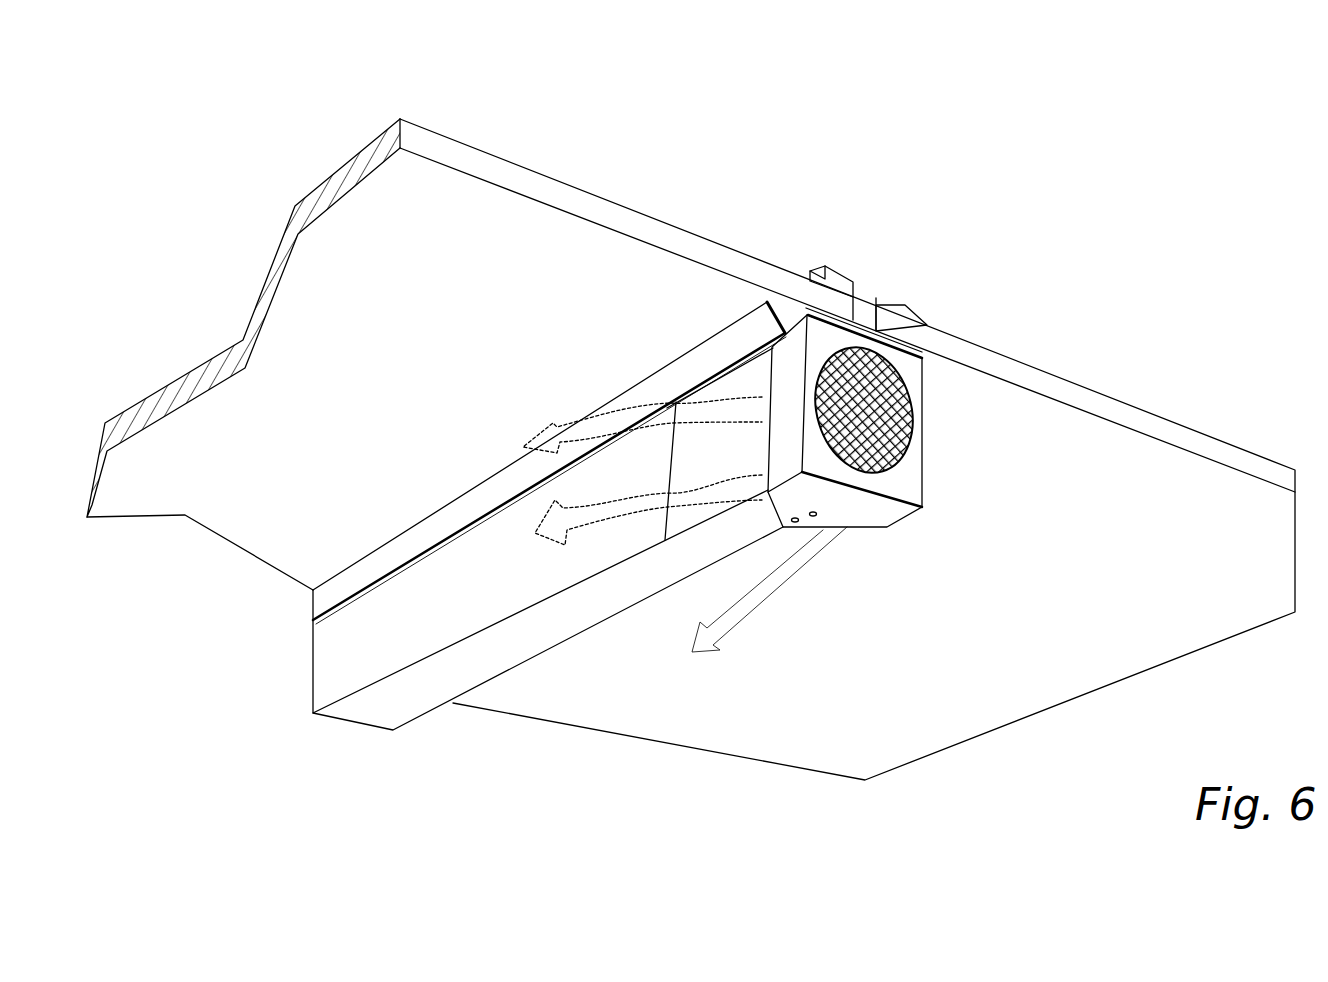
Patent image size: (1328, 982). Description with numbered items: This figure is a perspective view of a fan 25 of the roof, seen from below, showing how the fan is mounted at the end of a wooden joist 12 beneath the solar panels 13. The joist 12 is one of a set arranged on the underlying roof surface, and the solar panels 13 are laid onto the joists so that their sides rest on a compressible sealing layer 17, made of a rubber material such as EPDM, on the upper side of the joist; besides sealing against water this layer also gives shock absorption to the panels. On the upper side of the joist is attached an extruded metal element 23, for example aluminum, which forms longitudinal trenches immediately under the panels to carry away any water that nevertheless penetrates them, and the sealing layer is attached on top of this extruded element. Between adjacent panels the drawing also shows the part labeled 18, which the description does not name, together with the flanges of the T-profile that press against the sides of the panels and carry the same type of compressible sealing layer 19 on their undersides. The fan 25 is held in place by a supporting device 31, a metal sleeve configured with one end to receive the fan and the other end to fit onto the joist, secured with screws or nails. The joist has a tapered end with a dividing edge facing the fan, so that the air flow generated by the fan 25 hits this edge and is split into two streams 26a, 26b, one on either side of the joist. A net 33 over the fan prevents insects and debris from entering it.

The joist 12 is at (355, 630).
The solar panel 13 is at (630, 205).
The compressible sealing layer 17 is at (888, 342).
The bracket 18 is at (880, 290).
The compressible sealing layer 19 is at (803, 277).
The extruded metal element 23 is at (706, 330).
The fan 25 is at (908, 493).
The air stream 26a is at (587, 510).
The air stream 26b is at (768, 593).
The supporting device 31 is at (860, 512).
The net 33 is at (910, 432).